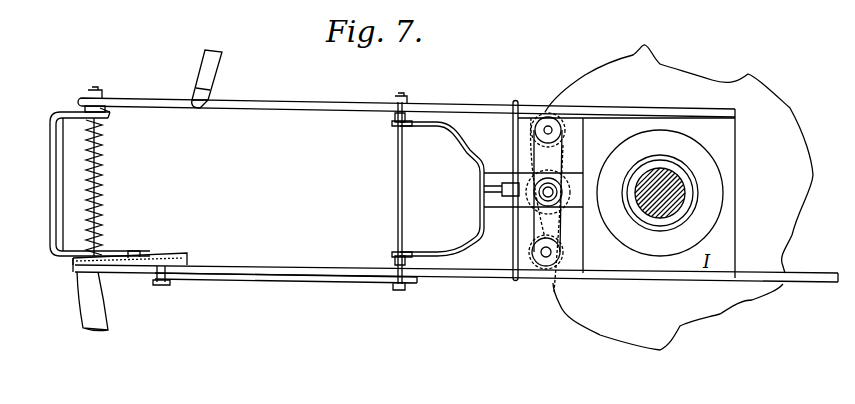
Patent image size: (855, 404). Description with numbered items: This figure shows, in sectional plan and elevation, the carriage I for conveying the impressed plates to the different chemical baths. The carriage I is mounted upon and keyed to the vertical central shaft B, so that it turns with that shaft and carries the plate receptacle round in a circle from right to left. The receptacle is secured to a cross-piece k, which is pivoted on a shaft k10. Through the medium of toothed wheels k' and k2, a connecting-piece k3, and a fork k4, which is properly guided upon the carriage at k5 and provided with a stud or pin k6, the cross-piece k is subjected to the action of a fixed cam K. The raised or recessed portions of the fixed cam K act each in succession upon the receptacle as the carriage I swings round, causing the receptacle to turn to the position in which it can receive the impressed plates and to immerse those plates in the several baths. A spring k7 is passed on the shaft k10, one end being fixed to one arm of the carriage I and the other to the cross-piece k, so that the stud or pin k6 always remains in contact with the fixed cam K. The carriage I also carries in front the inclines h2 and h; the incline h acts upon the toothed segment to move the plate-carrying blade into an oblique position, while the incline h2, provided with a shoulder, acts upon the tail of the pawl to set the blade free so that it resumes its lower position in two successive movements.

The carriage I is at (293, 102).
The incline h2 is at (205, 70).
The incline h is at (100, 307).
The cross-piece k is at (100, 182).
The shaft k10 is at (103, 150).
The spring k7 is at (97, 198).
The toothed wheel k2 is at (118, 255).
The toothed wheel k' is at (106, 274).
The connecting-piece k3 is at (260, 273).
The guide k5 is at (350, 267).
The fork k4 is at (455, 147).
The stud or pin k6 is at (556, 212).
The vertical central shaft B is at (688, 207).
The fixed cam K is at (712, 82).